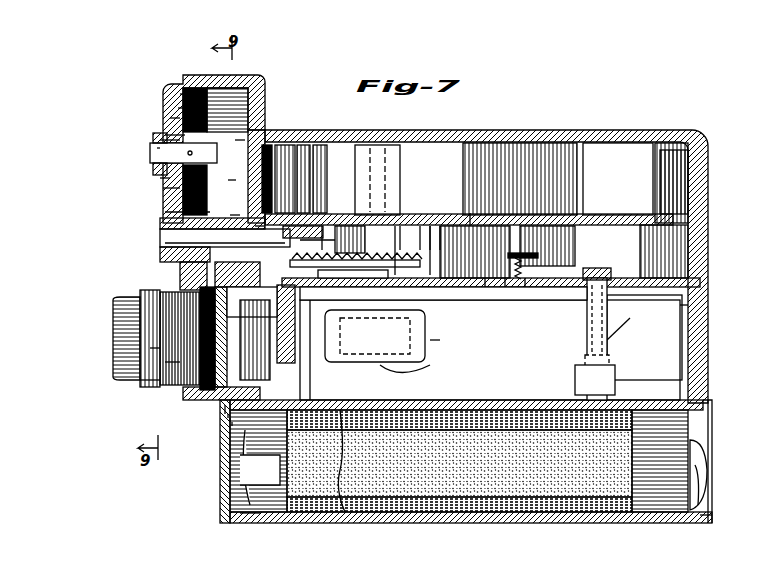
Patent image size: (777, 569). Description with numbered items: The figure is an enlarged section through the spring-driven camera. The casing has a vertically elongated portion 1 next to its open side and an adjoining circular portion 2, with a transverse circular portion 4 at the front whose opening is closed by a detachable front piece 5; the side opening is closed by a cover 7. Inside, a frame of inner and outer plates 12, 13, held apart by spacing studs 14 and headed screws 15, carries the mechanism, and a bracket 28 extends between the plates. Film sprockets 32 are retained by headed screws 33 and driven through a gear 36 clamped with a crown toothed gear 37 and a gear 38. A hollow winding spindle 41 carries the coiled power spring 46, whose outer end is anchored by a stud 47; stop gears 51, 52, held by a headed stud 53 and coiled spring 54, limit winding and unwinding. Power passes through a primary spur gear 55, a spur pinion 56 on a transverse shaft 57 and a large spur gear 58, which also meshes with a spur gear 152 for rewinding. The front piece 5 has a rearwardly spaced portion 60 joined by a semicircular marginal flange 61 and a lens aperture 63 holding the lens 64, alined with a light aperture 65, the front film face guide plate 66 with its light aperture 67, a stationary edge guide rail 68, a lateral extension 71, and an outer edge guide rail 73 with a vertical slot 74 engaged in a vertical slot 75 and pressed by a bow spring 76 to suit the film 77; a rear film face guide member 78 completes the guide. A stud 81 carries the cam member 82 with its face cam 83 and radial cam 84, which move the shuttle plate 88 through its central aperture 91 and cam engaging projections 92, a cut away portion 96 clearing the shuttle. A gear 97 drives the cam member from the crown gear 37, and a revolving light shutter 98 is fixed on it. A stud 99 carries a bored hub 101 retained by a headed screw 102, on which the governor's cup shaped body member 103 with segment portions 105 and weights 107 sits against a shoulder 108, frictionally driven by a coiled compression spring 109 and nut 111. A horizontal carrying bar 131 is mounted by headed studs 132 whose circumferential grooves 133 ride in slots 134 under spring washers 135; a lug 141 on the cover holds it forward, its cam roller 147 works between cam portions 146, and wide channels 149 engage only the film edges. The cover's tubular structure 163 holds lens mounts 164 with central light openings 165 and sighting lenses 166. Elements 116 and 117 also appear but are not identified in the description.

The casing portion 1 is at (673, 338).
The circular casing portion 2 is at (640, 160).
The transverse circular portion 4 is at (200, 78).
The front piece 5 is at (165, 175).
The cover 7 is at (700, 392).
The inner plate 12 is at (660, 220).
The outer plate 13 is at (700, 288).
The spacing studs 14 is at (665, 240).
The headed screws 15 is at (690, 305).
The bracket 28 is at (340, 235).
The constant feed film sprockets 32 is at (380, 440).
The headed screws 33 is at (345, 513).
The gear 36 is at (375, 175).
The crown toothed gear 37 is at (400, 240).
The gear 38 is at (340, 228).
The winding spindle 41 is at (470, 213).
The power spring 46 is at (565, 213).
The stud 47 is at (300, 112).
The stop gear 51 is at (485, 290).
The stop gear 52 is at (525, 290).
The headed stud 53 is at (540, 262).
The coiled spring 54 is at (505, 290).
The primary spur gear 55 is at (500, 213).
The spur pinion 56 is at (420, 240).
The transverse shaft 57 is at (430, 235).
The spur gear 58 is at (440, 235).
The rearwardly spaced portion 60 is at (175, 388).
The semicircular marginal flange 61 is at (205, 398).
The lens aperture 63 is at (140, 300).
The lens 64 is at (135, 318).
The light aperture 65 is at (175, 362).
The front film face guide plate 66 is at (160, 338).
The light aperture 67 is at (155, 348).
The stationary edge guide rail 68 is at (175, 290).
The lateral extension 71 is at (230, 420).
The outer edge guide rail 73 is at (232, 424).
The vertical slot 74 is at (228, 416).
The vertical slot 75 is at (225, 408).
The bow spring 76 is at (225, 412).
The film 77 is at (225, 405).
The rear film face guide member 78 is at (296, 518).
The stud 81 is at (170, 245).
The cam member 82 is at (180, 232).
The face cam 83 is at (232, 180).
The radial cam 84 is at (260, 228).
The shuttle plate 88 is at (165, 215).
The central aperture 91 is at (160, 188).
The cam engaging projections 92 is at (235, 215).
The cut away portion 96 is at (195, 275).
The gear 97 is at (322, 240).
The revolving light shutter 98 is at (155, 375).
The stud 99 is at (160, 158).
The bored hub 101 is at (157, 150).
The headed screw 102 is at (240, 140).
The cup shaped body member 103 is at (185, 130).
The segment portions 105 is at (180, 95).
The weights 107 is at (178, 110).
The shoulder 108 is at (170, 120).
The coiled compression spring 109 is at (165, 135).
The nut 111 is at (160, 140).
The pin 116 is at (150, 180).
The drum 117 is at (215, 76).
The horizontal carrying bar 131 is at (650, 350).
The headed studs 132 is at (597, 275).
The circumferential grooves 133 is at (605, 295).
The slots 134 is at (615, 318).
The spring washers 135 is at (605, 362).
The lug 141 is at (580, 375).
The cam portion 146 is at (425, 290).
The cam roller 147 is at (435, 340).
The channels 149 is at (400, 362).
The spur gear 152 is at (525, 230).
The tubular structure 163 is at (530, 525).
The lens mounts 164 is at (712, 430).
The central light openings 165 is at (705, 470).
The lenses 166 is at (700, 520).